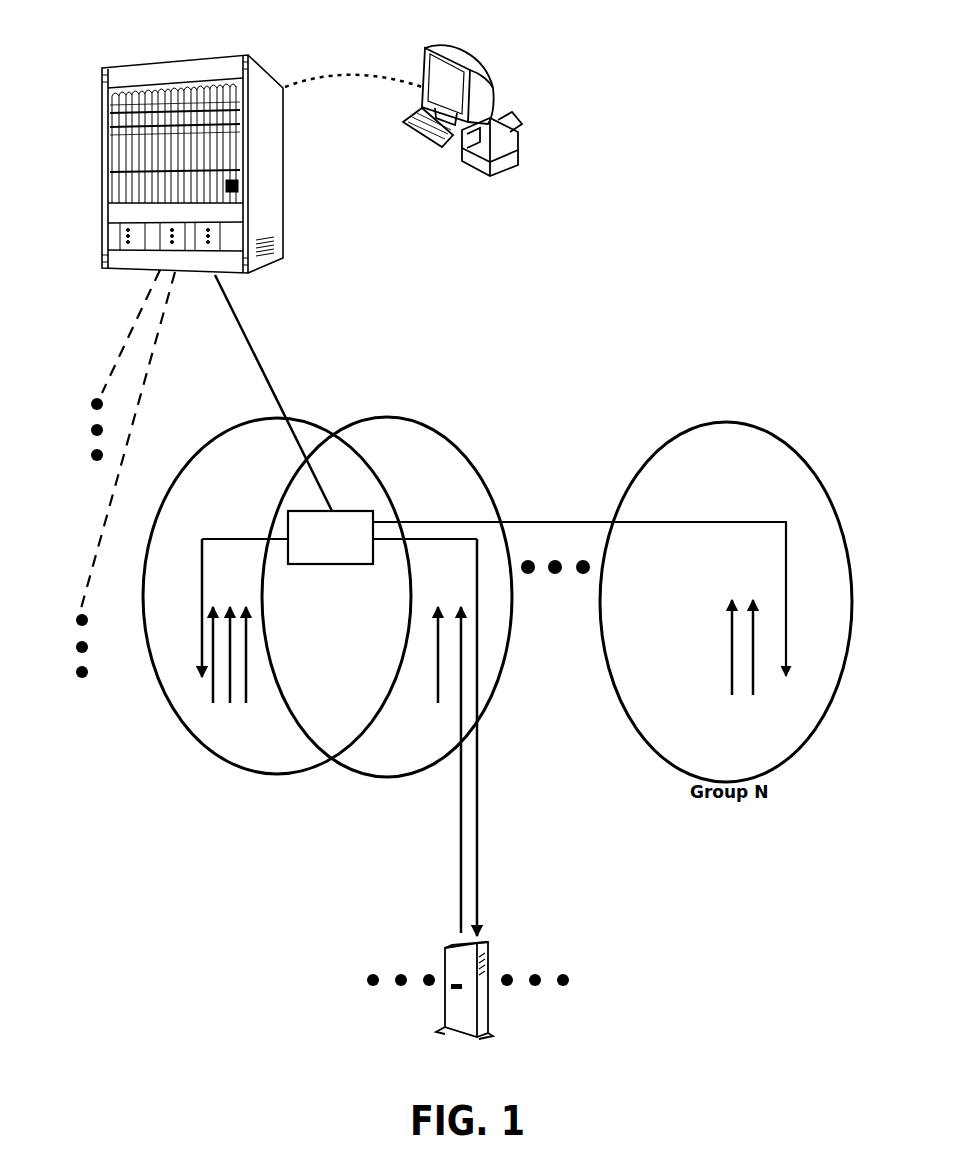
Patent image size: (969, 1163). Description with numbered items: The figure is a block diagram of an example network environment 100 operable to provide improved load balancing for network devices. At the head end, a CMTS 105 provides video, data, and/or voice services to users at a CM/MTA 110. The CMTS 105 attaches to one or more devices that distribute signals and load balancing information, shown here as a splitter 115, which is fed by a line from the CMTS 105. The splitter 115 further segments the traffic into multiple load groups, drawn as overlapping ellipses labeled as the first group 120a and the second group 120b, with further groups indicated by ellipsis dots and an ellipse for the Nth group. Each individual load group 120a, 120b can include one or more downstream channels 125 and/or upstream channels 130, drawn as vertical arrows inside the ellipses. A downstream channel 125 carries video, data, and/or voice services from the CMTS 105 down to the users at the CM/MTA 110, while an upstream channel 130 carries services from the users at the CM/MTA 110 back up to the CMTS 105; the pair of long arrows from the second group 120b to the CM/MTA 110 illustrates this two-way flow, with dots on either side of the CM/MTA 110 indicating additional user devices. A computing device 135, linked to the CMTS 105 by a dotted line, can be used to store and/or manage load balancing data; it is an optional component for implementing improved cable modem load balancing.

The communication system 100 is at (757, 66).
The CMTS 105 is at (205, 56).
The CM/MTA 110 is at (490, 943).
The splitter 115 is at (300, 565).
The load group (Group 1) 120a is at (298, 418).
The load group (Group 2) 120b is at (427, 423).
The downstream channel 125 is at (480, 773).
The upstream channel 130 is at (458, 827).
The computing device 135 is at (463, 56).